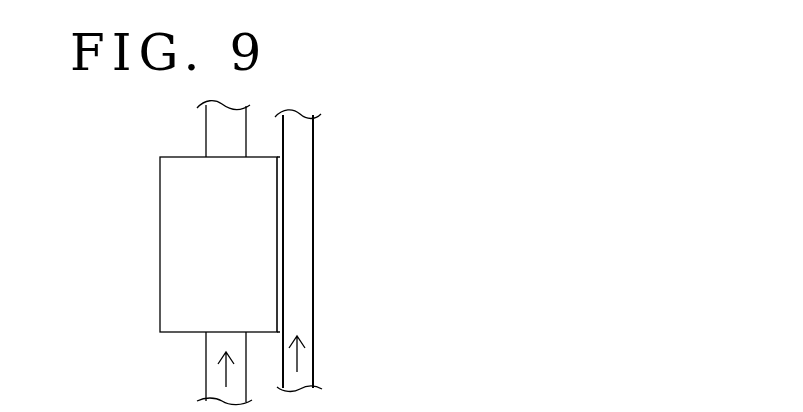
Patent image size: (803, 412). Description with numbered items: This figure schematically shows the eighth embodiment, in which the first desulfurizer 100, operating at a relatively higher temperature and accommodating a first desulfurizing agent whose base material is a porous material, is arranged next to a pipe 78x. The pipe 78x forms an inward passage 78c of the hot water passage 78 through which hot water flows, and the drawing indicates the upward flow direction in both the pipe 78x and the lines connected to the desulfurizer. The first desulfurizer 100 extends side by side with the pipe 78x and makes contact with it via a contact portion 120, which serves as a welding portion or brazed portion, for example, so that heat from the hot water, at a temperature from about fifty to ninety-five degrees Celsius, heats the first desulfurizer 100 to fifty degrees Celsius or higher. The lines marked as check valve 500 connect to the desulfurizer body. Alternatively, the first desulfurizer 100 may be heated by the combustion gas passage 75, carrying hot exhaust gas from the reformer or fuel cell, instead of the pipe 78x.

The first desulfurizer 100 is at (175, 268).
The check valve 500 is at (216, 136).
The contact portion 120 is at (280, 222).
The pipe 78x is at (300, 262).
The hot water passage 78 is at (300, 312).
The inward passage 78c is at (298, 251).
The combustion gas passage 75 is at (298, 251).